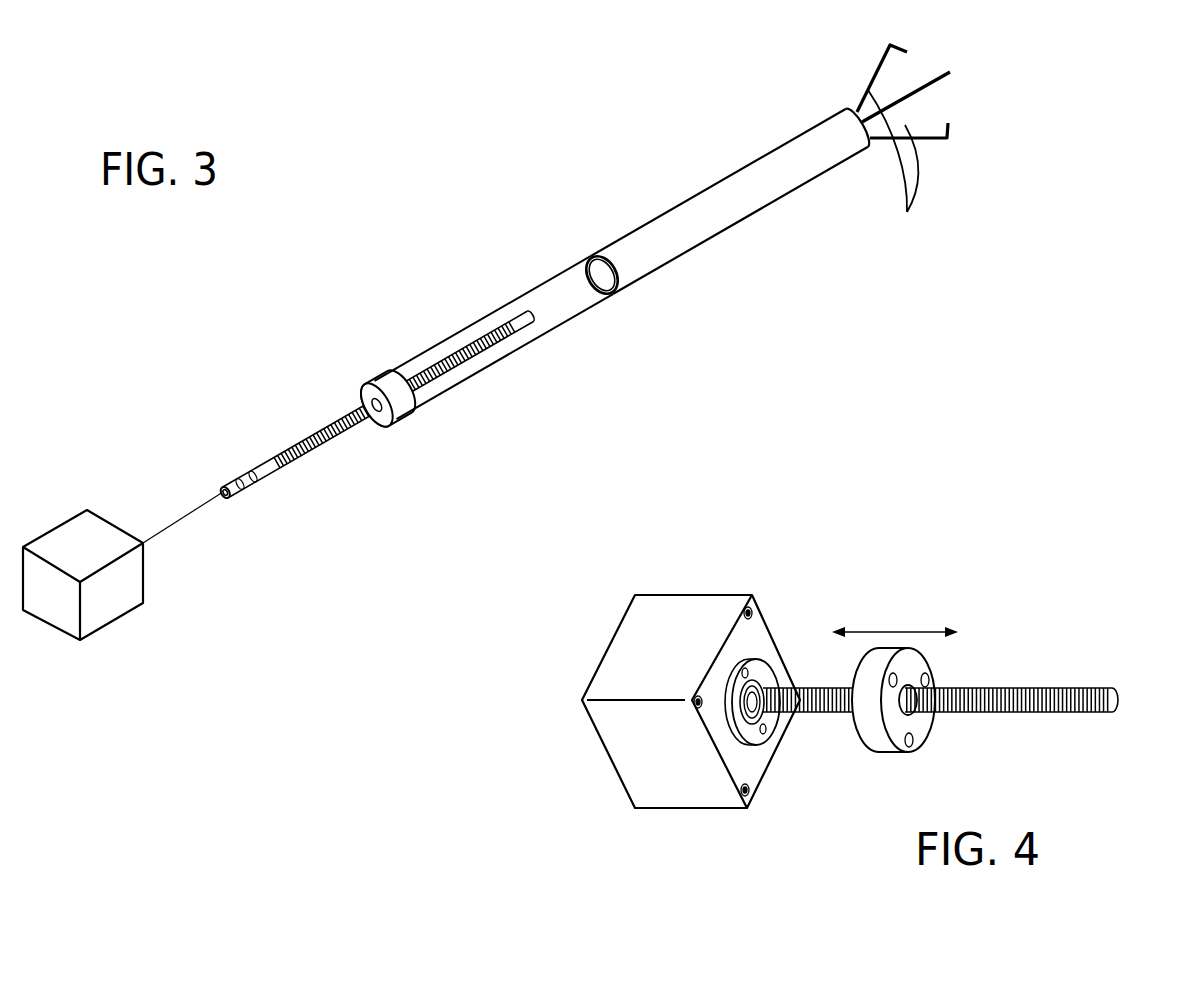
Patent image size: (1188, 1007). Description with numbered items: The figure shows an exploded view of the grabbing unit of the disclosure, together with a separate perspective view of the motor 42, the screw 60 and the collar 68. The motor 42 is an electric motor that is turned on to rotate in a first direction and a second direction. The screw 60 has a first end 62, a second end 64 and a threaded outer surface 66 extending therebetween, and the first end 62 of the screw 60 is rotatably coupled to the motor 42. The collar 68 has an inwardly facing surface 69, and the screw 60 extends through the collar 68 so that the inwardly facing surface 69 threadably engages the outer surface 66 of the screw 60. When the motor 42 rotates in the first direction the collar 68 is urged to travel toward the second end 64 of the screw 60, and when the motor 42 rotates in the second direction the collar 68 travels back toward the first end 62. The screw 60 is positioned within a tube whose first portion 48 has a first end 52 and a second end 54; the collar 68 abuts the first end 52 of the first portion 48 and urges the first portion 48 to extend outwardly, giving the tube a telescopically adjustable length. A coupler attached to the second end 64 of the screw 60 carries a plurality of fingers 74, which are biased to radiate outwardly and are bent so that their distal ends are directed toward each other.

In FIG. 3, the motor 42 is at (123, 617).
In FIG. 4, the motor 42 is at (718, 595).
In FIG. 3, the first portion of the tube 48 is at (732, 199).
In FIG. 3, the first end of the first portion 52 is at (602, 275).
In FIG. 3, the second end of the first portion 54 is at (853, 110).
In FIG. 3, the screw 60 is at (378, 404).
In FIG. 4, the screw 60 is at (940, 688).
In FIG. 3, the first end of the screw 62 is at (225, 492).
In FIG. 3, the second end of the screw 64 is at (493, 337).
In FIG. 3, the outer surface of the screw 66 is at (394, 395).
In FIG. 4, the outer surface of the screw 66 is at (987, 718).
In FIG. 3, the collar 68 is at (387, 398).
In FIG. 4, the collar 68 is at (895, 752).
In FIG. 4, the inwardly facing surface 69 is at (908, 688).
In FIG. 3, the fingers 74 is at (898, 170).